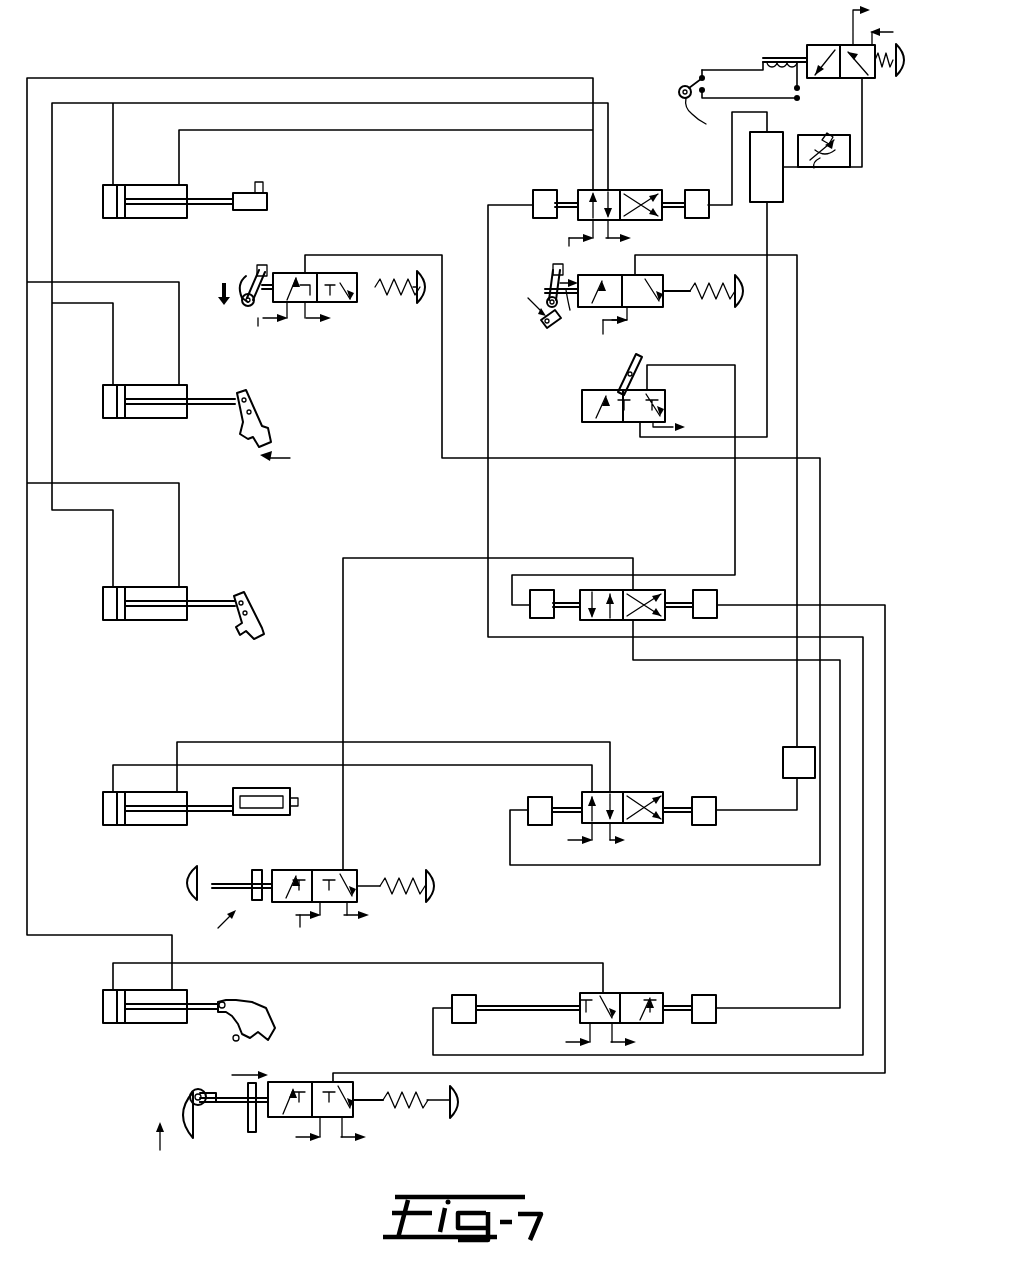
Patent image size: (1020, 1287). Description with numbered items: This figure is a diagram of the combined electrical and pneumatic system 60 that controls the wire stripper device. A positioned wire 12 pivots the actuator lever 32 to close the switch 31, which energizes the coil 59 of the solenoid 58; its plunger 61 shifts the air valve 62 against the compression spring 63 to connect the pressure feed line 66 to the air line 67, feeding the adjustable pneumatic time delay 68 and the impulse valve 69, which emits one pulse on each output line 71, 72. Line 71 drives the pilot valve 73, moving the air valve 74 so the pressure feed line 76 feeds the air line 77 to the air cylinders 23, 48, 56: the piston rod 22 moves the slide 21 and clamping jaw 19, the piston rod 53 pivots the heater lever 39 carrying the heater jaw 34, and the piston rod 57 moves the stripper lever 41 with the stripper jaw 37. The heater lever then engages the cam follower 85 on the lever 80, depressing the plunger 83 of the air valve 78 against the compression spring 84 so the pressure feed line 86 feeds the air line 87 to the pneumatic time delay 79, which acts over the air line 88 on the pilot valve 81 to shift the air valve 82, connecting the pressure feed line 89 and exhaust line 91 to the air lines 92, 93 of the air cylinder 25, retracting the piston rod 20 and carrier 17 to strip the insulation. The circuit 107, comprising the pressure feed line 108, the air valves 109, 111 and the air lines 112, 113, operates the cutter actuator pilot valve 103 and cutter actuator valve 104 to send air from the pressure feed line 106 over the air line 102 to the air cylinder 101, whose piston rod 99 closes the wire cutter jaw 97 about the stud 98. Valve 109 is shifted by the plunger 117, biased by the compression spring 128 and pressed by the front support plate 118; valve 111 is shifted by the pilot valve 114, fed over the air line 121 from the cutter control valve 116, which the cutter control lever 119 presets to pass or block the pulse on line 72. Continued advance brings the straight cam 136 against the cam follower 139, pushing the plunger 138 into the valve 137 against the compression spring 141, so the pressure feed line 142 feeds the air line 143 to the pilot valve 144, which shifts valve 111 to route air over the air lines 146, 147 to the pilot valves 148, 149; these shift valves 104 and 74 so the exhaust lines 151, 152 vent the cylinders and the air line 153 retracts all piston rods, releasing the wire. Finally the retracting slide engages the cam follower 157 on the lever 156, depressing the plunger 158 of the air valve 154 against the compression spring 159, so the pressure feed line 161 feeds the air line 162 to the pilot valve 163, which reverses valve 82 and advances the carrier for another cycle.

The wire 12 is at (679, 91).
The carrier 17 is at (290, 788).
The wire clamping jaw 19 is at (263, 184).
The piston rod 20 is at (197, 812).
The slide 21 is at (245, 214).
The piston rod 22 is at (218, 195).
The air cylinder 23 is at (150, 218).
The air cylinder 25 is at (120, 822).
The switch 31 is at (705, 90).
The actuator lever 32 is at (698, 118).
The heater jaw 34 is at (277, 459).
The stripper jaw 37 is at (243, 642).
The heater lever 39 is at (257, 404).
The stripper lever 41 is at (260, 612).
The air cylinder 48 is at (158, 418).
The piston rod 53 is at (220, 398).
The air cylinder 56 is at (156, 622).
The piston rod 57 is at (220, 600).
The solenoid 58 is at (698, 74).
The coil 59 is at (774, 52).
The pneumatic control circuit 60 is at (438, 52).
The plunger 61 is at (756, 62).
The air valve 62 is at (807, 50).
The compression spring 63 is at (888, 83).
The pressure feed line 66 is at (873, 24).
The air line 67 is at (867, 150).
The adjustable pneumatic time delay 68 is at (845, 178).
The impulse valve 69 is at (783, 198).
The output line 71 is at (732, 165).
The output line 72 is at (767, 226).
The pilot valve 73 is at (702, 190).
The air valve 74 is at (620, 180).
The pressure feed line 76 is at (565, 237).
The air line 77 is at (52, 208).
The air valve 78 is at (655, 312).
The pneumatic time delay 79 is at (782, 762).
The lever 80 is at (542, 284).
The pilot valve 81 is at (700, 796).
The air valve 82 is at (610, 800).
The plunger 83 is at (574, 309).
The compression spring 84 is at (721, 304).
The cam follower 85 is at (534, 319).
The pressure feed line 86 is at (605, 333).
The air line 87 is at (703, 255).
The air line 88 is at (755, 810).
The pressure feed line 89 is at (566, 842).
The exhaust line 91 is at (620, 846).
The air line 92 is at (462, 742).
The air line 93 is at (458, 776).
The wire cutter jaw 97 is at (274, 1014).
The stud 98 is at (232, 1038).
The piston rod 99 is at (209, 1004).
The air cylinder 101 is at (110, 1024).
The air line 102 is at (273, 963).
The cutter actuator pilot valve 103 is at (705, 994).
The cutter actuator valve 104 is at (626, 992).
The pressure feed line 106 is at (570, 1040).
The circuit 107 is at (352, 840).
The pressure feed line 108 is at (322, 918).
The air valve 109 is at (207, 929).
The air valve 111 is at (620, 570).
The air line 112 is at (343, 653).
The air line 113 is at (728, 660).
The pilot valve 114 is at (525, 618).
The cutter control valve 116 is at (570, 388).
The plunger 117 is at (232, 880).
The front support plate 118 is at (182, 874).
The cutter control lever 119 is at (620, 382).
The air line 121 is at (734, 487).
The compression spring 128 is at (370, 874).
The straight cam 136 is at (256, 998).
The valve 137 is at (305, 1080).
The plunger 138 is at (236, 1084).
The cam follower 139 is at (190, 1090).
The compression spring 141 is at (422, 1110).
The pressure feed line 142 is at (298, 1137).
The air line 143 is at (880, 632).
The pilot valve 144 is at (717, 598).
The air line 146 is at (716, 637).
The air line 147 is at (482, 220).
The pilot valve 148 is at (444, 1020).
The pilot valve 149 is at (536, 190).
The exhaust line 151 is at (624, 1040).
The exhaust line 152 is at (610, 238).
The air line 153 is at (330, 78).
The air valve 154 is at (327, 330).
The lever 156 is at (246, 278).
The cam follower 157 is at (244, 306).
The plunger 158 is at (264, 270).
The compression spring 159 is at (392, 304).
The pressure feed line 161 is at (256, 327).
The air line 162 is at (360, 255).
The pilot valve 163 is at (527, 798).